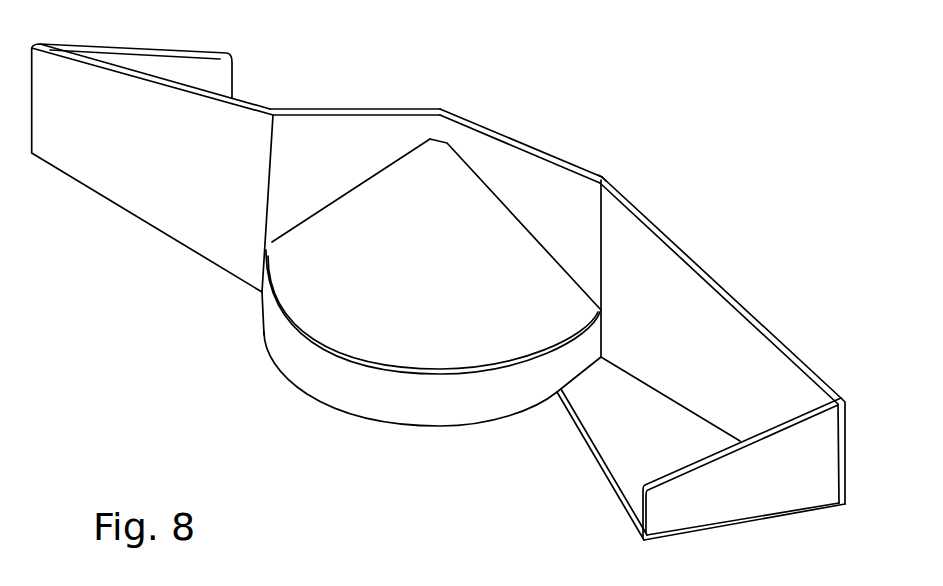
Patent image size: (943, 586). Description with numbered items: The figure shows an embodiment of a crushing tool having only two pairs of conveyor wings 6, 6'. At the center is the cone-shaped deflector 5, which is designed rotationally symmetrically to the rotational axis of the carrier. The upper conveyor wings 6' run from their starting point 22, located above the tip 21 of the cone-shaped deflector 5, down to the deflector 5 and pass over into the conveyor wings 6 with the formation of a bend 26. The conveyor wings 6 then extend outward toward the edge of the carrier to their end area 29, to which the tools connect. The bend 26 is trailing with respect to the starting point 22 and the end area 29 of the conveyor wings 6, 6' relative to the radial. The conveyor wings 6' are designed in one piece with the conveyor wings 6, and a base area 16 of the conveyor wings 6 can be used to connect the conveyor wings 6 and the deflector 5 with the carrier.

The deflector 5 is at (432, 328).
The conveyor wings 6 is at (722, 340).
The conveyor wings 6' is at (516, 190).
The base area 16 is at (628, 425).
The tip of the cone 21 is at (439, 115).
The starting point 22 is at (440, 109).
The bend 26 is at (603, 180).
The end area 29 is at (792, 465).